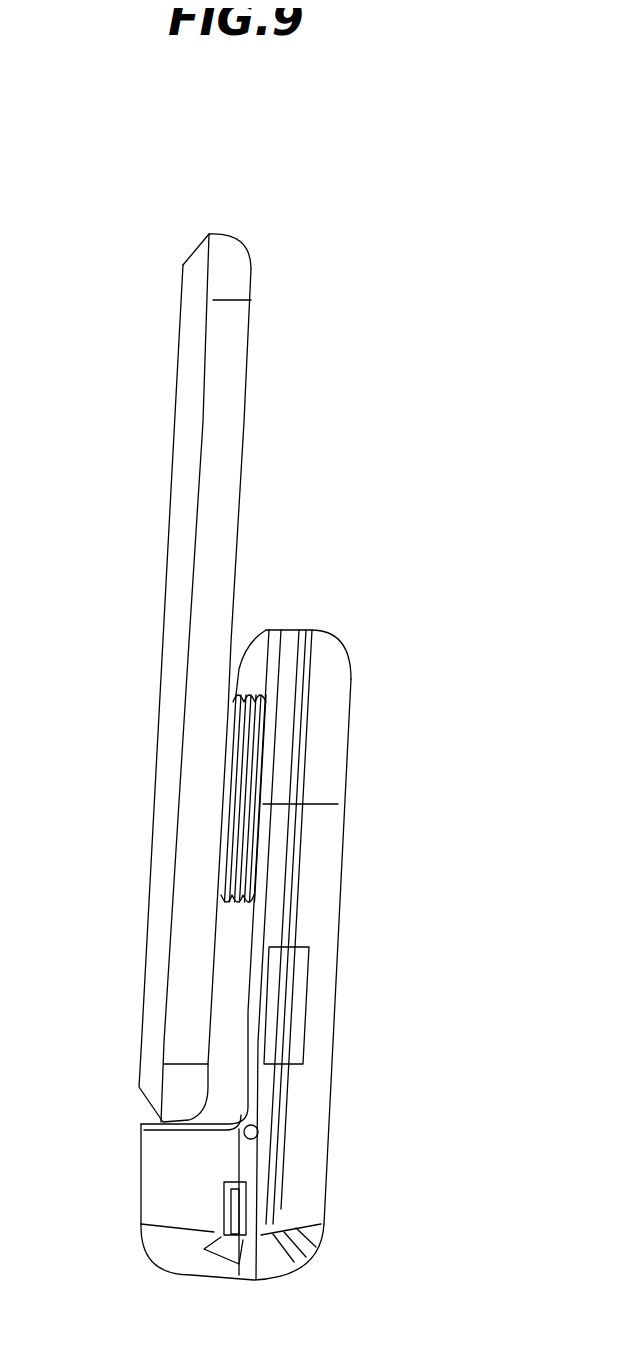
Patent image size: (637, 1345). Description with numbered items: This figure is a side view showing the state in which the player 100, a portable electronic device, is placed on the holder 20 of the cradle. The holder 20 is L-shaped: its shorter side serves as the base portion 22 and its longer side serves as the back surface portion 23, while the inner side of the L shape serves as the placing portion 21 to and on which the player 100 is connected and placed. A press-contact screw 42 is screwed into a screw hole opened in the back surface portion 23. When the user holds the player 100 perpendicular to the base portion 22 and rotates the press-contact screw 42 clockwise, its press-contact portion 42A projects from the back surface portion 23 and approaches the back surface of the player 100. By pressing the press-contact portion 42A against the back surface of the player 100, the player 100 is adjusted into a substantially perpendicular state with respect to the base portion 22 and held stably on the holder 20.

The player 100 is at (230, 257).
The holder 20 is at (380, 625).
The placing portion 21 is at (245, 985).
The base portion 22 is at (177, 1182).
The back surface portion 23 is at (323, 858).
The press-contact screw 42 is at (265, 628).
The press-contact portion 42A is at (218, 805).